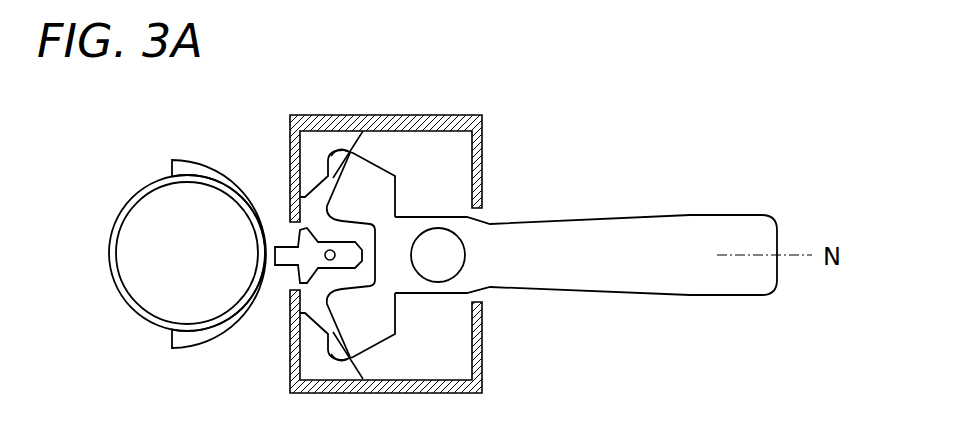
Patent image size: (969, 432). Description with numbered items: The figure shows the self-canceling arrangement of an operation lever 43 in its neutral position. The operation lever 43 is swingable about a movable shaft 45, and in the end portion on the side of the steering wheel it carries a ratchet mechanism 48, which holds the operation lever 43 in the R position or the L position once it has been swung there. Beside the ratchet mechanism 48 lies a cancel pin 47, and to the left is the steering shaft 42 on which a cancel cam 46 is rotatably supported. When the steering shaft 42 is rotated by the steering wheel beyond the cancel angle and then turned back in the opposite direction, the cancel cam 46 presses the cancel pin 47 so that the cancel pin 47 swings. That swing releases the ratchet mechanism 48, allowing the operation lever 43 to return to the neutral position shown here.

The steering shaft 42 is at (160, 302).
The operation lever 43 is at (652, 215).
The movable shaft 45 is at (463, 255).
The cancel cam 46 is at (207, 166).
The cancel pin 47 is at (300, 272).
The ratchet mechanism 48 is at (338, 158).